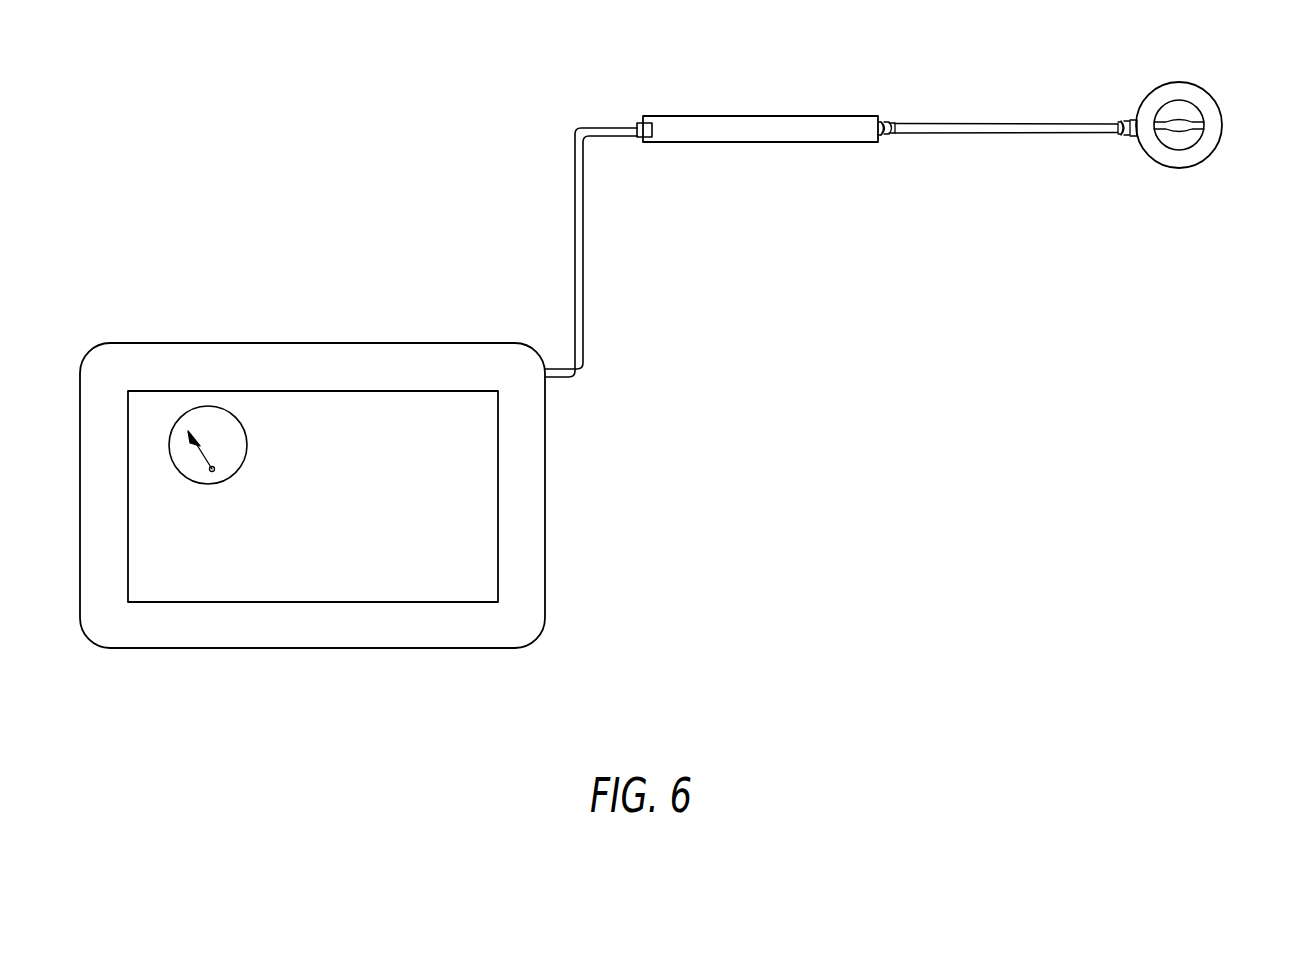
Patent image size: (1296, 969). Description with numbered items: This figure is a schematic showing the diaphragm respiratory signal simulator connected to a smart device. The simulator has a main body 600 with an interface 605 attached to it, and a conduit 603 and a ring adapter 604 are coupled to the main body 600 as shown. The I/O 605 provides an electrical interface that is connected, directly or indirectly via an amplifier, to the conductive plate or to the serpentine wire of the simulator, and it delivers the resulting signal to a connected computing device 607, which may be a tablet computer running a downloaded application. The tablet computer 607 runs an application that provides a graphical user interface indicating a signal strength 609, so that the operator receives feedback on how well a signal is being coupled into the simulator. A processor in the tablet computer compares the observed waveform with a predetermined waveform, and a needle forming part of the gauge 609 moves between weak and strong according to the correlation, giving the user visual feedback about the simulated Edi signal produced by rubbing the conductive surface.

The main body 600 is at (748, 116).
The conduit 603 is at (968, 122).
The ring adapter 604 is at (1187, 83).
The interface 605 is at (638, 122).
The computing device 607 is at (545, 603).
The signal strength gauge 609 is at (247, 425).